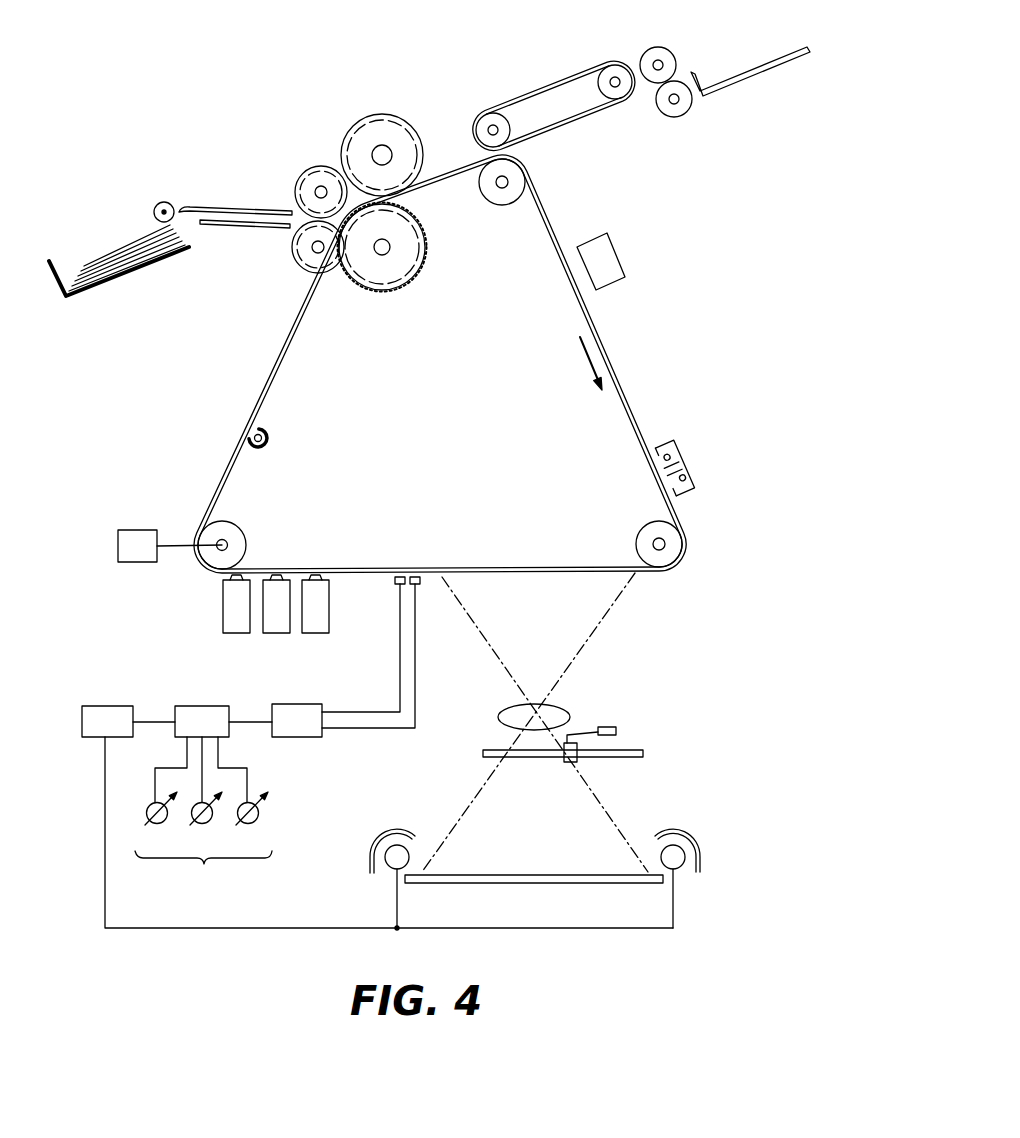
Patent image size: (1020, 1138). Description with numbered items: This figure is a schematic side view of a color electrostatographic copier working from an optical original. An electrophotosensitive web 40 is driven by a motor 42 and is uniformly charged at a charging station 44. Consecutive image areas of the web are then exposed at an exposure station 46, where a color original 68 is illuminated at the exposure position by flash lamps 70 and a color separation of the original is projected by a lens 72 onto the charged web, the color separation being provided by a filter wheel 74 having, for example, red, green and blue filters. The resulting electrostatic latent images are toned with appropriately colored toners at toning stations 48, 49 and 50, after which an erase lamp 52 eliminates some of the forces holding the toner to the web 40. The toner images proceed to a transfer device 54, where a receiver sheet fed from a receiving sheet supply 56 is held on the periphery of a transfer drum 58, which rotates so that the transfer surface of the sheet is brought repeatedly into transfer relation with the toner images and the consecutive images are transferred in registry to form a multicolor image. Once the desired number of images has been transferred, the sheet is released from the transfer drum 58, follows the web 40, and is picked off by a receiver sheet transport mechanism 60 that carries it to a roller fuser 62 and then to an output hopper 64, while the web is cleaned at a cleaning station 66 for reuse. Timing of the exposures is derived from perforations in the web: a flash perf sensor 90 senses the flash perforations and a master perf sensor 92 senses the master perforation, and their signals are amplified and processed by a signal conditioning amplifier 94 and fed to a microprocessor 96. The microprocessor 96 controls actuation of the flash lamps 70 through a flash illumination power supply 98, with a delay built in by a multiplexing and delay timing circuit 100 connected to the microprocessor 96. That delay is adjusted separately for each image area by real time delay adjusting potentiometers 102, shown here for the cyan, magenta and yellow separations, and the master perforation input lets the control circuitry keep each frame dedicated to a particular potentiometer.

The electrophotosensitive web 40 is at (265, 385).
The motor 42 is at (140, 532).
The charging station 44 is at (700, 470).
The exposure station 46 is at (527, 751).
The toning station 48 is at (322, 610).
The toning station 49 is at (278, 620).
The toning station 50 is at (235, 600).
The erase lamp 52 is at (270, 444).
The transfer device 54 is at (355, 175).
The receiving sheet supply 56 is at (118, 212).
The transfer drum 58 is at (400, 113).
The receiver sheet transport mechanism 60 is at (548, 92).
The roller fuser 62 is at (663, 47).
The output hopper 64 is at (753, 63).
The cleaning station 66 is at (612, 263).
The color original 68 is at (510, 874).
The flash lamps 70 is at (370, 860).
The lens 72 is at (572, 706).
The filter wheel 74 is at (627, 757).
The flash perf sensor 90 is at (396, 574).
The master perf sensor 92 is at (420, 576).
The signal conditioning amplifier 94 is at (307, 738).
The microprocessor 96 is at (223, 698).
The flash illumination power supply 98 is at (118, 712).
The multiplexing and delay timing circuit 100 is at (188, 712).
The real time delay adjusting potentiometers 102 is at (204, 864).